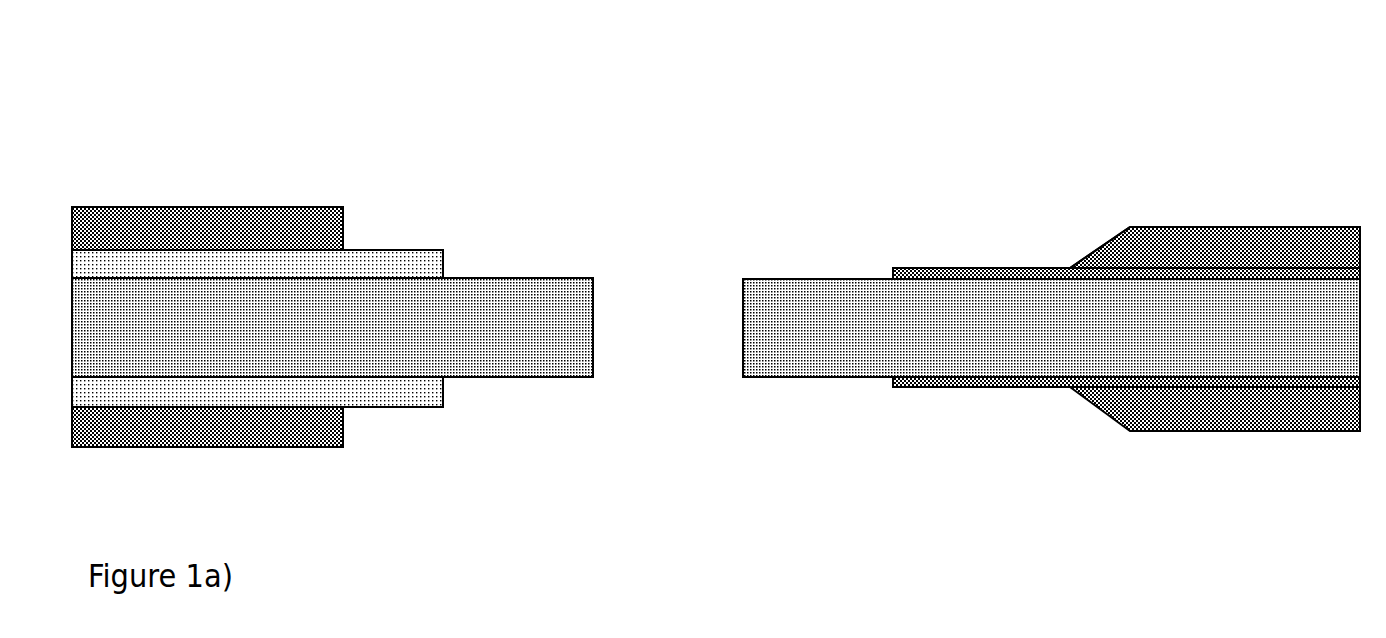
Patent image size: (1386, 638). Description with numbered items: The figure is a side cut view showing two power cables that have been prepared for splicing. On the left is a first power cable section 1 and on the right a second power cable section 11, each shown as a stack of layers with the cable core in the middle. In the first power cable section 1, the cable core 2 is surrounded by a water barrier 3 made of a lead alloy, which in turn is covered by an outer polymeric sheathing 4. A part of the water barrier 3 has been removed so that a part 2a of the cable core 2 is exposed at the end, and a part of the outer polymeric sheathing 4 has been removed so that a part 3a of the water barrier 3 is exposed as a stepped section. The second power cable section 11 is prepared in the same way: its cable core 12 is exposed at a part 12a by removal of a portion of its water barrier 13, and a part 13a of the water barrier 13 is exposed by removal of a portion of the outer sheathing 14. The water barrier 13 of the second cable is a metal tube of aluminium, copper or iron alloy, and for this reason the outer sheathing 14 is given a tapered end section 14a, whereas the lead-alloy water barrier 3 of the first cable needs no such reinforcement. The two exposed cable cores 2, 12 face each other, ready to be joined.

The first power cable section 1 is at (278, 167).
The cable core 2 is at (332, 327).
The exposed part of cable core 2a is at (514, 277).
The water barrier 3 is at (257, 330).
The exposed part of water barrier 3a is at (388, 249).
The outer polymeric sheathing 4 is at (207, 327).
The second power cable section 11 is at (1185, 188).
The cable core 12 is at (1051, 328).
The exposed part of cable core 12a is at (816, 277).
The water barrier 13 is at (1330, 223).
The exposed part of water barrier 13a is at (948, 267).
The outer polymeric sheathing 14 is at (1215, 329).
The tapered end section 14a is at (1102, 247).